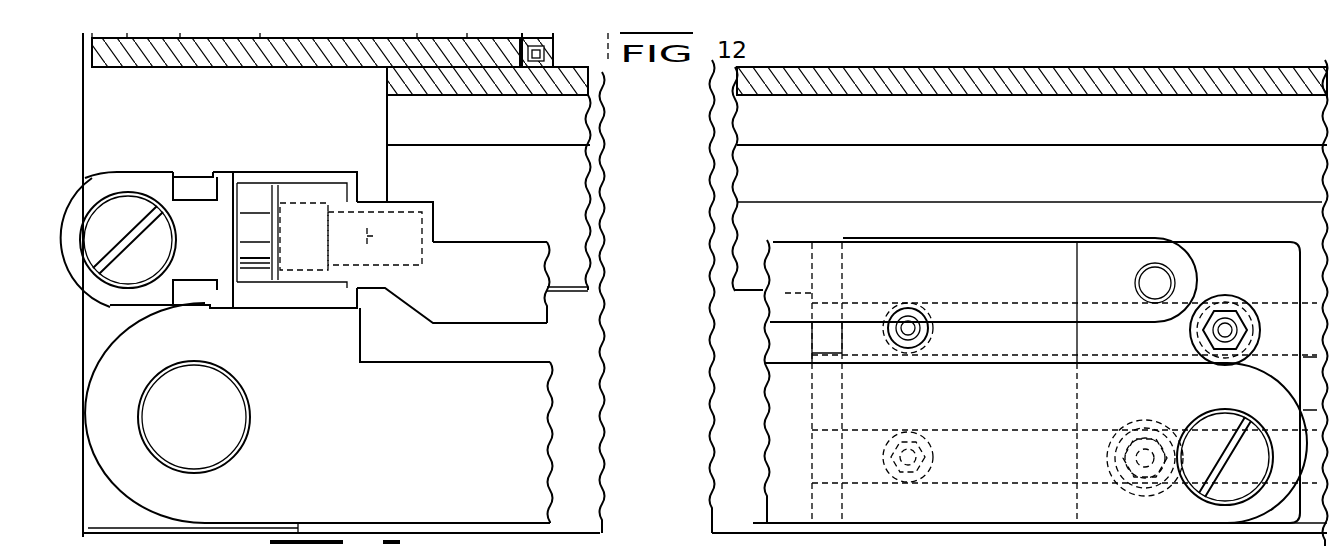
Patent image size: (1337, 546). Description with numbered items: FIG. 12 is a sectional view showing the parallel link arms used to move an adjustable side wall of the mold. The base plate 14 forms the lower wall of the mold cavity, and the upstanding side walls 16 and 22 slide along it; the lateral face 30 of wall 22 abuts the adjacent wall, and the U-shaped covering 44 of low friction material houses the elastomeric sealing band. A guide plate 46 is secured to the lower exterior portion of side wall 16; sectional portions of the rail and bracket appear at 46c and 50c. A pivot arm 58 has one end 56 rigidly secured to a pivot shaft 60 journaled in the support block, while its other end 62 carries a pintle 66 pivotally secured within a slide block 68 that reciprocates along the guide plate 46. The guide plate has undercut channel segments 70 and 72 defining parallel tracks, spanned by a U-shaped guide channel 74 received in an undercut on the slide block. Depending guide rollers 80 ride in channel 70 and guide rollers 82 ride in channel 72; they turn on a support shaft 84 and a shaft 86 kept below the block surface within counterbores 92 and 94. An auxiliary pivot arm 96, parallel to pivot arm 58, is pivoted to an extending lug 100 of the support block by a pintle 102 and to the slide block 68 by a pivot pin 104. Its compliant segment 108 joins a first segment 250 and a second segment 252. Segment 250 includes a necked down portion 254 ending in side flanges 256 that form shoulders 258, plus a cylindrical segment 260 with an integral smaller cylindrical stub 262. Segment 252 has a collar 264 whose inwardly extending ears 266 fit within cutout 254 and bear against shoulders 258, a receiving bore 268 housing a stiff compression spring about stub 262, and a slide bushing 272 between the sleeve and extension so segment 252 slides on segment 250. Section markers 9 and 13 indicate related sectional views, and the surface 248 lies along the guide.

The section line 9- 9 is at (58, 218).
The section line 13- 13 is at (58, 268).
The base plate 14 is at (722, 348).
The upstanding side wall 16 is at (748, 68).
The upstanding side wall 22 is at (556, 42).
The lateral face 30 is at (535, 68).
The U-shaped covering 44 is at (545, 70).
The guide plate 46 is at (740, 231).
The guide rail section 46c is at (85, 40).
The rail flange 50c is at (182, 66).
The end of pivot arm 56 is at (97, 468).
The pivot arm 58 is at (510, 362).
The pivot shaft 60 is at (220, 437).
The other end of pivot arm 62 is at (1292, 534).
The pintle 66 is at (1215, 440).
The slide block 68 is at (1267, 252).
The undercut channel segment 70 is at (818, 336).
The undercut channel segment 72 is at (822, 458).
The U-shaped guide channel 74 is at (1304, 388).
The guide rollers 80 is at (932, 332).
The guide rollers 82 is at (935, 463).
The support shaft 84 is at (908, 322).
The shaft 86 is at (908, 432).
The counterbore 92 is at (1217, 310).
The counterbore 94 is at (1147, 420).
The auxiliary pivot arm 96 is at (518, 242).
The extending lug 100 is at (92, 178).
The pintle 102 is at (128, 265).
The pivot pin 104 is at (1150, 278).
The compliant segment 108 is at (290, 158).
The guide surface 248 is at (470, 146).
The first segment 250 is at (150, 172).
The second segment 252 is at (413, 290).
The necked down portion 254 is at (176, 202).
The side flanges 256 is at (233, 182).
The shoulders 258 is at (186, 245).
The cylindrical segment 260 is at (258, 195).
The cylindrical stub 262 is at (370, 230).
The collar 264 is at (307, 180).
The inwardly extending ears 266 is at (187, 177).
The receiving bore 268 is at (399, 200).
The slide bushing 272 is at (272, 285).